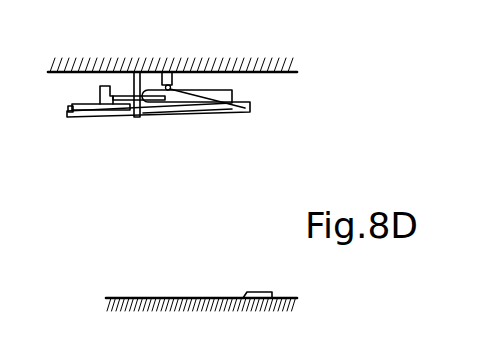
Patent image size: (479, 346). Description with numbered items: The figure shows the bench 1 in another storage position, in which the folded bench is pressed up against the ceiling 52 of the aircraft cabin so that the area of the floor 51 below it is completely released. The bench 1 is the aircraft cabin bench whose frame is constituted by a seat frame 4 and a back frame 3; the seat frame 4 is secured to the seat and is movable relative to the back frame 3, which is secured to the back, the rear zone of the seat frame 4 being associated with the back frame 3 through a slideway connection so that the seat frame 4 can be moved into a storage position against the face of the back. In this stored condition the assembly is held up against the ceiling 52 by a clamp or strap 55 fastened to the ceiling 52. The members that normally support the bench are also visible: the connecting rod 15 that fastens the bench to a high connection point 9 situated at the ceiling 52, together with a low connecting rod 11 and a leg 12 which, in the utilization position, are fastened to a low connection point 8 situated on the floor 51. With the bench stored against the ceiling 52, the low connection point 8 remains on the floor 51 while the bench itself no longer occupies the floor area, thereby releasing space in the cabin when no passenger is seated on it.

The bench 1 is at (171, 113).
The back frame 3 is at (227, 114).
The seat frame 4 is at (205, 118).
The low connection point 8 is at (262, 291).
The high connection point 9 is at (170, 73).
The low connecting rod 11 is at (92, 103).
The leg 12 is at (93, 118).
The connecting rod 15 is at (213, 94).
The floor 51 is at (140, 297).
The ceiling 52 is at (288, 73).
The strap 55 is at (124, 78).